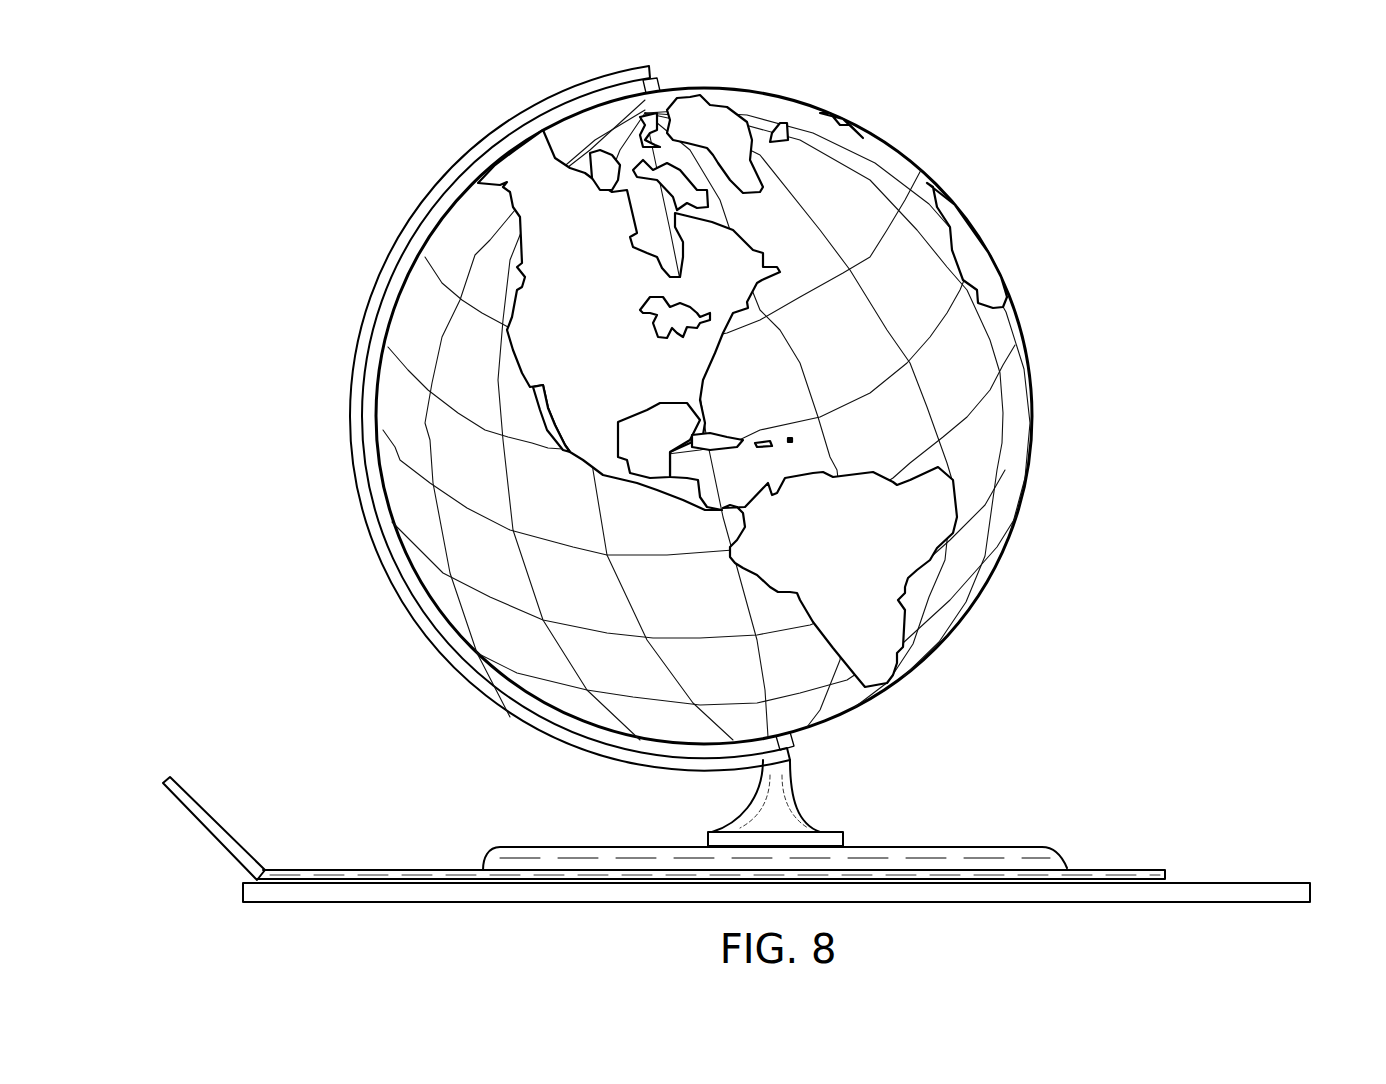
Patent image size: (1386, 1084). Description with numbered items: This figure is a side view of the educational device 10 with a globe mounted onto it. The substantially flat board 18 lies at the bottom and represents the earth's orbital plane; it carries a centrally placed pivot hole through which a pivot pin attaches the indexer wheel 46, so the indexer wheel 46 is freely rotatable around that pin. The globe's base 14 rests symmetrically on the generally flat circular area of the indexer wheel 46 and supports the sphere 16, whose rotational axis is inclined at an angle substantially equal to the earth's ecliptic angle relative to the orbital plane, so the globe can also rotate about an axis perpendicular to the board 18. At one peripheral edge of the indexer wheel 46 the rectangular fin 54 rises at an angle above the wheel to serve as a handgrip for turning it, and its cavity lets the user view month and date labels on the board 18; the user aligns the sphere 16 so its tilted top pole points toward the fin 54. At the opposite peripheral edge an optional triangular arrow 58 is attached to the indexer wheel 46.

The educational device 10 is at (1178, 449).
The base 14 is at (790, 795).
The sphere 16 is at (988, 342).
The board 18 is at (1223, 883).
The indexer wheel 46 is at (1068, 868).
The fin 54 is at (201, 819).
The arrow 58 is at (1152, 870).